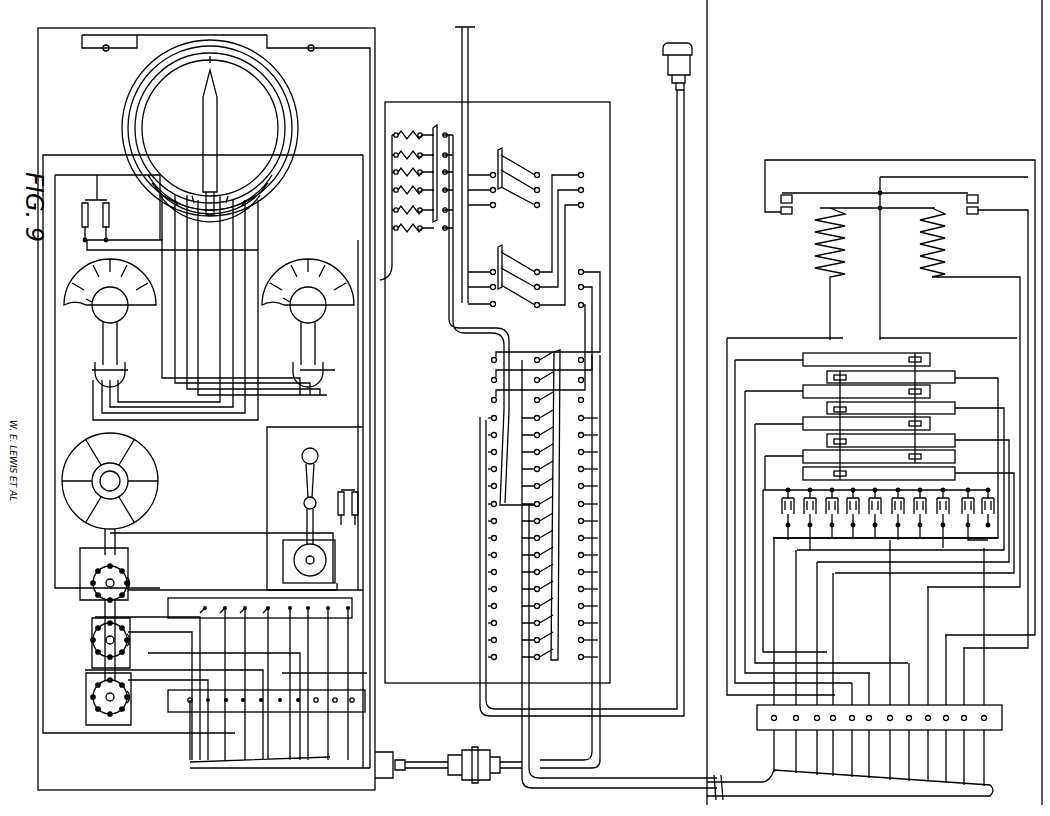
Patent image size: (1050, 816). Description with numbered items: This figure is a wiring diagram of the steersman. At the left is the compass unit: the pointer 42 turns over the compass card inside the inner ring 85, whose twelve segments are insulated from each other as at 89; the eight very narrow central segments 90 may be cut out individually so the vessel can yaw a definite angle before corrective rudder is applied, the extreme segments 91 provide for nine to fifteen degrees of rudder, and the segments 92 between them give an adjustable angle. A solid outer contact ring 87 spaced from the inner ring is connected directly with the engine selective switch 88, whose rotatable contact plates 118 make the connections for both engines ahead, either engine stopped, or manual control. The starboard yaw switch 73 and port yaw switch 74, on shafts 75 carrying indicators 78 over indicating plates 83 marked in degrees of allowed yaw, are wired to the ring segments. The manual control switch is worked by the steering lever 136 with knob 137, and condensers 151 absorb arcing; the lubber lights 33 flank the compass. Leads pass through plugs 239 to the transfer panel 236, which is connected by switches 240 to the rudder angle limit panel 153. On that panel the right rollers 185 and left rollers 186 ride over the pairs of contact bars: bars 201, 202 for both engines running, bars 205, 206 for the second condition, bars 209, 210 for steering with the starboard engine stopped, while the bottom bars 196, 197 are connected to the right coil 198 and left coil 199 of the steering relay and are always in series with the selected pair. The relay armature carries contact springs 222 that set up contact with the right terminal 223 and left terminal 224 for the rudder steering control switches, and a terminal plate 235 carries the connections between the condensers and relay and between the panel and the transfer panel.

The lubber lights 33 is at (312, 51).
The pointer 42 is at (210, 135).
The extreme segments 91 is at (278, 103).
The inner ring 85 is at (288, 116).
The solid outer contact ring 87 is at (298, 128).
The insulation 89 is at (292, 193).
The segments 92 is at (268, 181).
The central segments 90 is at (152, 212).
The indicating plates 83 is at (325, 240).
The condensers 151 is at (80, 200).
The port yaw switch 74 is at (125, 313).
The pointers or indicators 78 is at (289, 305).
The starboard yaw switch 73 is at (325, 308).
The shafts 75 is at (322, 342).
The engine selective switch 88 is at (150, 463).
The steering lever 136 is at (318, 460).
The knob 137 is at (304, 497).
The rotatable contact plates 118 is at (97, 598).
The transfer panel 236 is at (497, 392).
The plugs 239 is at (475, 750).
The switches 240 is at (540, 652).
The contact springs 222 is at (875, 257).
The right terminal 223 is at (980, 206).
The left terminal 224 is at (790, 216).
The left coil 199 is at (812, 255).
The right coil 198 is at (945, 258).
The right rollers 185 is at (932, 358).
The left rollers 186 is at (833, 377).
The contact bar 201 is at (885, 454).
The contact bar 202 is at (832, 359).
The contact bar 206 is at (837, 391).
The contact bar 205 is at (900, 475).
The contact bar 210 is at (842, 423).
The contact bar 209 is at (913, 497).
The contact bar 196 is at (860, 456).
The contact bar 197 is at (908, 519).
The rudder angle limit panel 153 is at (880, 554).
The terminal plate 235 is at (1003, 731).